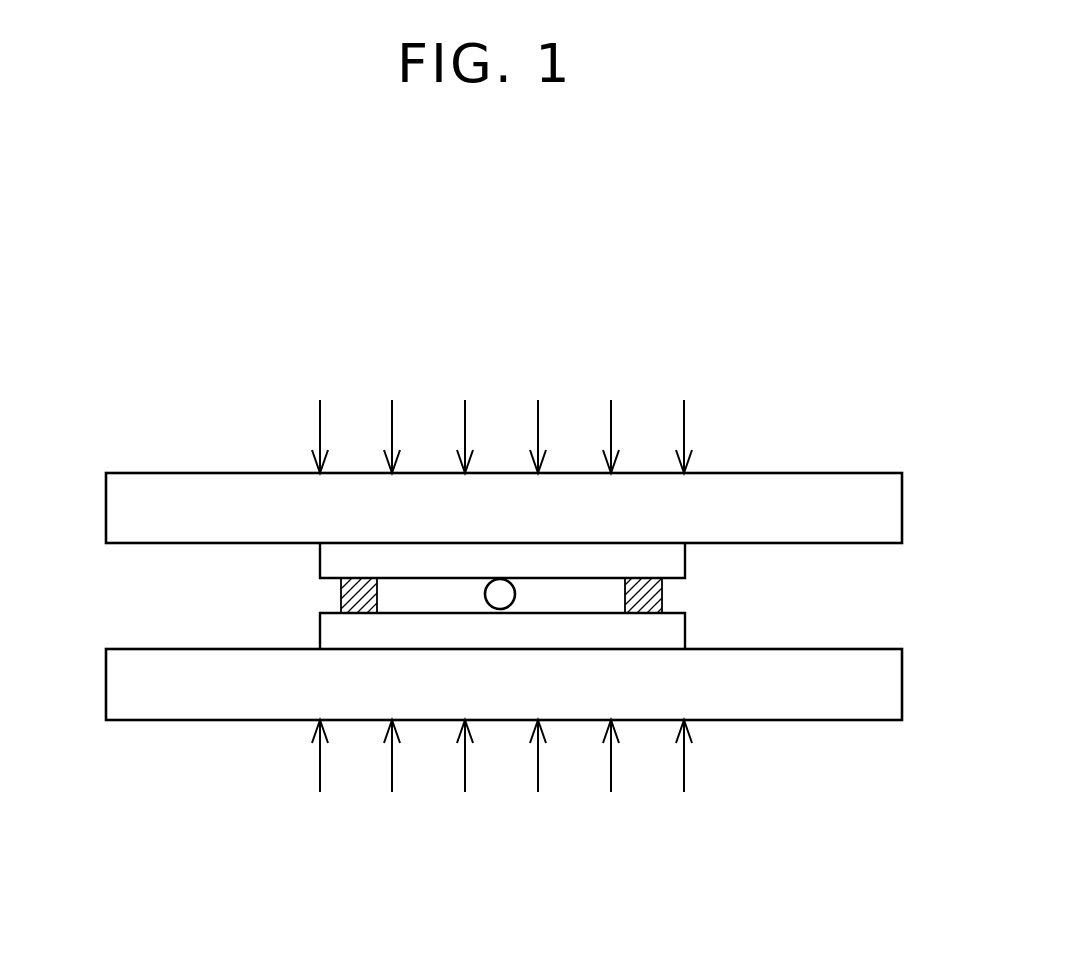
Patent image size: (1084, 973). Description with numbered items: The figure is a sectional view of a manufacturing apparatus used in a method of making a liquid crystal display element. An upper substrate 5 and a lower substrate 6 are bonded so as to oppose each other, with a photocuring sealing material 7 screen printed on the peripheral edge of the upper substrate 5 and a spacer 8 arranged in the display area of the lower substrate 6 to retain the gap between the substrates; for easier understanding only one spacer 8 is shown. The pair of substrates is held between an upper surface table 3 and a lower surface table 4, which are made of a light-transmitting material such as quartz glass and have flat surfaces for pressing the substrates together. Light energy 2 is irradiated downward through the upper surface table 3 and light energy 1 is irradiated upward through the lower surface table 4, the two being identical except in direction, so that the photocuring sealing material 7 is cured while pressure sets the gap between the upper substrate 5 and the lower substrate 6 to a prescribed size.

The light energy 1 is at (612, 765).
The light energy 2 is at (532, 428).
The upper surface table 3 is at (830, 519).
The lower surface table 4 is at (828, 698).
The upper substrate 5 is at (335, 568).
The lower substrate 6 is at (335, 627).
The photocuring sealing material 7 is at (650, 597).
The spacer 8 is at (498, 593).